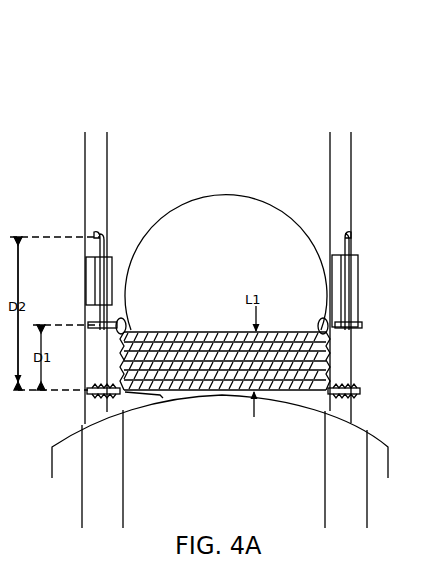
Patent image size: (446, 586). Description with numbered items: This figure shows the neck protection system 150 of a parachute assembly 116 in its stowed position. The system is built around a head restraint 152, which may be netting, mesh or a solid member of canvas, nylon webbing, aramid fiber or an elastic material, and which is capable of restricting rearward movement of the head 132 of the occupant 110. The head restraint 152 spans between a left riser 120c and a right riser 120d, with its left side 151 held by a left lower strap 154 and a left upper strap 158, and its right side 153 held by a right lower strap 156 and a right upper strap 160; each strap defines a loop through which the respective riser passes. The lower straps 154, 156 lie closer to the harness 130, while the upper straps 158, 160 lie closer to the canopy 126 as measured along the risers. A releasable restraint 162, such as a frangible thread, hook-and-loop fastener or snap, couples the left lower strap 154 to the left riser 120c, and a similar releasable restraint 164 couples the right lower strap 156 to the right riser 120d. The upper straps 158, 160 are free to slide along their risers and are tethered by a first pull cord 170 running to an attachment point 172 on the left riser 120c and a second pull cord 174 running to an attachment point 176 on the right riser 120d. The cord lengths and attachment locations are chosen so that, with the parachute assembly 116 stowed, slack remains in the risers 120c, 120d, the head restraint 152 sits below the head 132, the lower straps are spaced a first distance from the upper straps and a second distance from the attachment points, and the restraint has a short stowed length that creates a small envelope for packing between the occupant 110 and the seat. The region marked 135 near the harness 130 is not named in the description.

The parachute assembly 116 is at (96, 86).
The left riser 120c is at (88, 168).
The right riser 120d is at (345, 176).
The canopy 126 is at (226, 135).
The neck protection system 150 is at (158, 288).
The head 132 is at (225, 237).
The head restraint 152 is at (240, 330).
The left side of head restraint 151 is at (118, 355).
The right side of head restraint 153 is at (334, 355).
The attachment point 172 is at (97, 236).
The pull cord 170 is at (105, 282).
The left upper strap 158 is at (88, 325).
The left lower strap 154 is at (87, 394).
The releasable restraint 162 is at (99, 396).
The attachment point 176 is at (347, 236).
The pull cord 174 is at (350, 284).
The right upper strap 160 is at (362, 325).
The right lower strap 156 is at (360, 393).
The releasable restraint 164 is at (345, 396).
The occupant 110 is at (54, 443).
The harness 130 is at (338, 470).
The lower region 135 is at (227, 445).